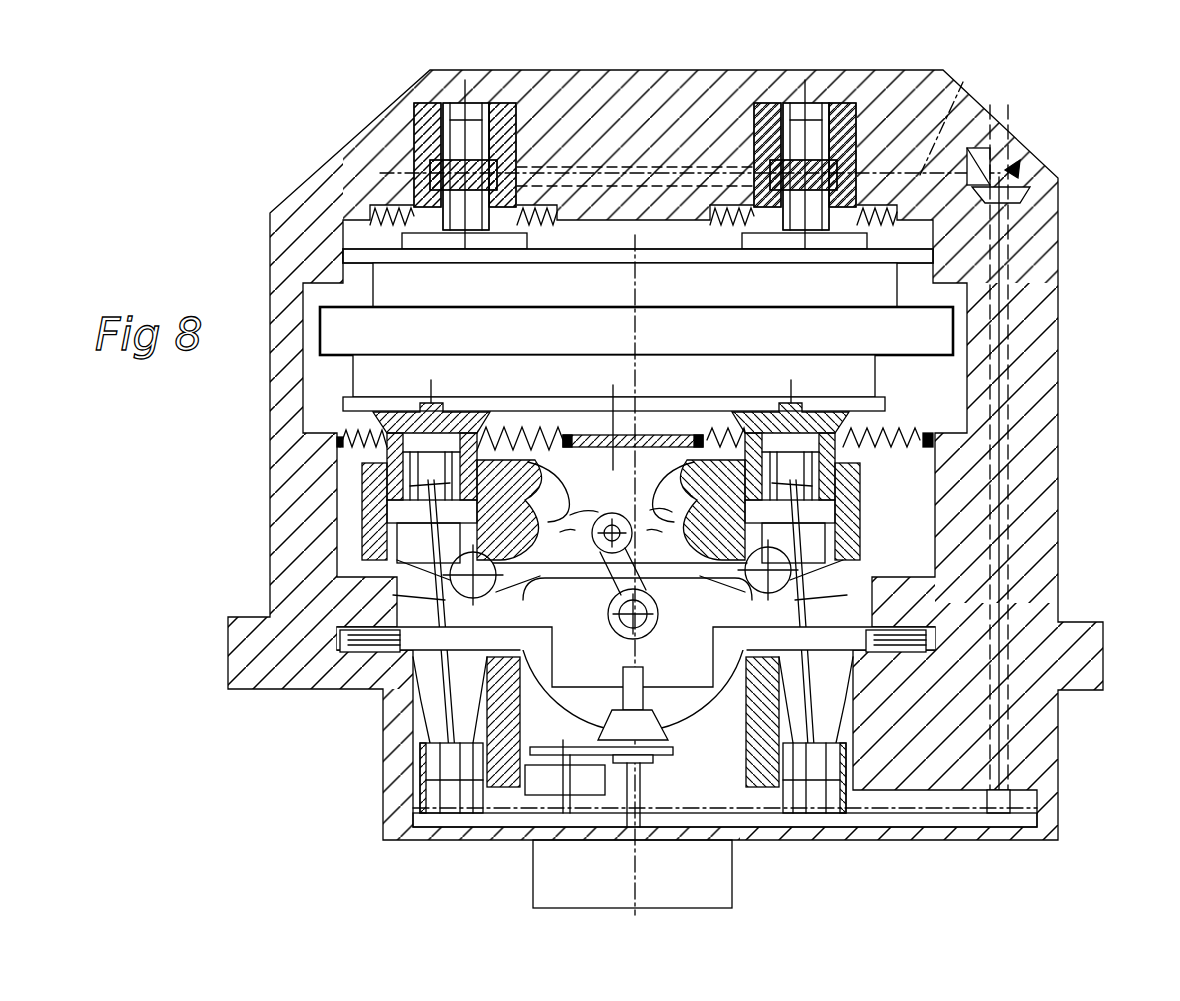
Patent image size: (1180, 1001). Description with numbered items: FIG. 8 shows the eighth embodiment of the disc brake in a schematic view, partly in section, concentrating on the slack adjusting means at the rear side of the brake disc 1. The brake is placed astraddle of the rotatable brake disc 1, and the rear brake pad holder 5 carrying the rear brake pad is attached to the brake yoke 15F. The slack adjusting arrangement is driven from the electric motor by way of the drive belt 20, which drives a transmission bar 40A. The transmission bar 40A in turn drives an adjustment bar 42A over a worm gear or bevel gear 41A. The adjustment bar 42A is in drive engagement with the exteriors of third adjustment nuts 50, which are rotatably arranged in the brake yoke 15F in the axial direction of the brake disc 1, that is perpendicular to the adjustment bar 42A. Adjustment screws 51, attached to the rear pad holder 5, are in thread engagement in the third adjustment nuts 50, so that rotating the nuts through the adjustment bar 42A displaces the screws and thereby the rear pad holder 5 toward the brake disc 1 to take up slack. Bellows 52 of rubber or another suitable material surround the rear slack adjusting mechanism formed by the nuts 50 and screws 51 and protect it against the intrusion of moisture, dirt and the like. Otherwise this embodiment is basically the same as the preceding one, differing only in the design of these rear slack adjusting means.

The third adjustment nut 50 is at (430, 102).
The adjustment screw 51 is at (475, 135).
The bellows 52 is at (533, 203).
The adjustment bar 42A is at (972, 78).
The worm gear or bevel gear 41A is at (1022, 172).
The rear brake pad holder 5 is at (920, 250).
The brake disc 1 is at (940, 322).
The brake yoke 15F is at (1040, 392).
The transmission bar 40A is at (1010, 500).
The drive belt 20 is at (918, 824).